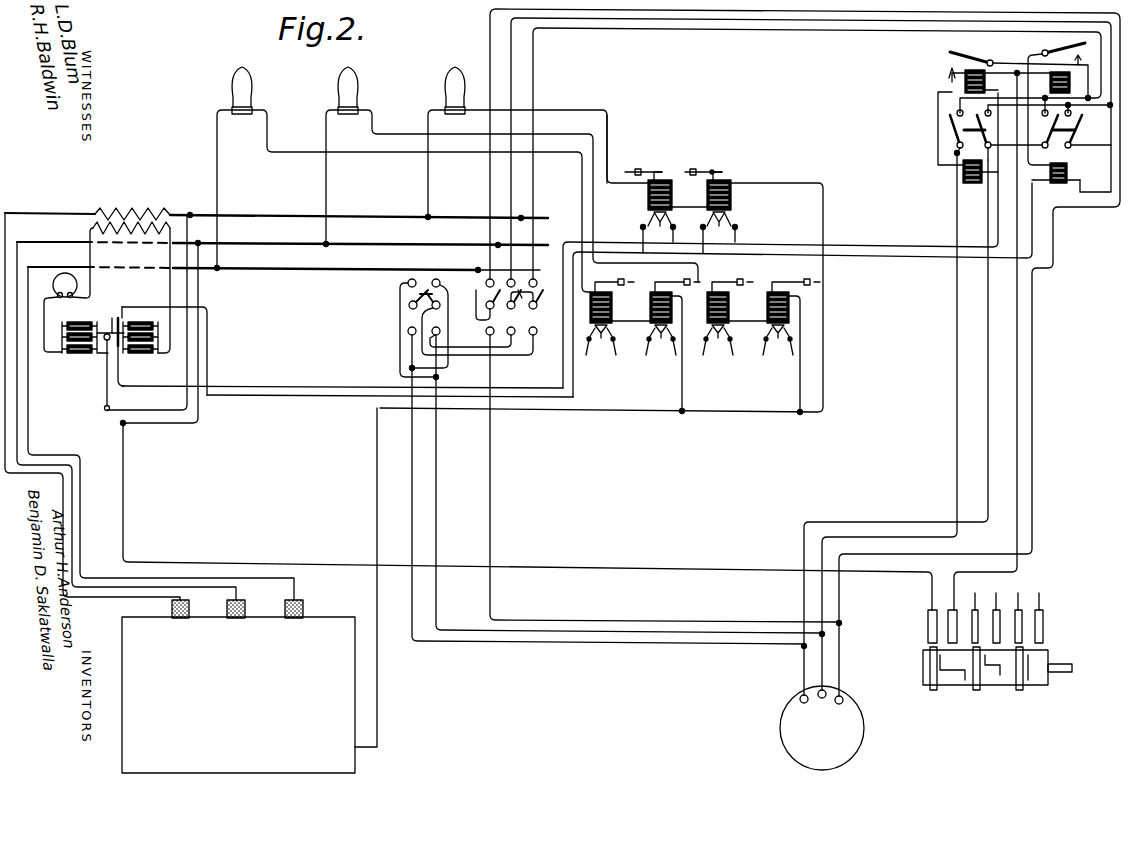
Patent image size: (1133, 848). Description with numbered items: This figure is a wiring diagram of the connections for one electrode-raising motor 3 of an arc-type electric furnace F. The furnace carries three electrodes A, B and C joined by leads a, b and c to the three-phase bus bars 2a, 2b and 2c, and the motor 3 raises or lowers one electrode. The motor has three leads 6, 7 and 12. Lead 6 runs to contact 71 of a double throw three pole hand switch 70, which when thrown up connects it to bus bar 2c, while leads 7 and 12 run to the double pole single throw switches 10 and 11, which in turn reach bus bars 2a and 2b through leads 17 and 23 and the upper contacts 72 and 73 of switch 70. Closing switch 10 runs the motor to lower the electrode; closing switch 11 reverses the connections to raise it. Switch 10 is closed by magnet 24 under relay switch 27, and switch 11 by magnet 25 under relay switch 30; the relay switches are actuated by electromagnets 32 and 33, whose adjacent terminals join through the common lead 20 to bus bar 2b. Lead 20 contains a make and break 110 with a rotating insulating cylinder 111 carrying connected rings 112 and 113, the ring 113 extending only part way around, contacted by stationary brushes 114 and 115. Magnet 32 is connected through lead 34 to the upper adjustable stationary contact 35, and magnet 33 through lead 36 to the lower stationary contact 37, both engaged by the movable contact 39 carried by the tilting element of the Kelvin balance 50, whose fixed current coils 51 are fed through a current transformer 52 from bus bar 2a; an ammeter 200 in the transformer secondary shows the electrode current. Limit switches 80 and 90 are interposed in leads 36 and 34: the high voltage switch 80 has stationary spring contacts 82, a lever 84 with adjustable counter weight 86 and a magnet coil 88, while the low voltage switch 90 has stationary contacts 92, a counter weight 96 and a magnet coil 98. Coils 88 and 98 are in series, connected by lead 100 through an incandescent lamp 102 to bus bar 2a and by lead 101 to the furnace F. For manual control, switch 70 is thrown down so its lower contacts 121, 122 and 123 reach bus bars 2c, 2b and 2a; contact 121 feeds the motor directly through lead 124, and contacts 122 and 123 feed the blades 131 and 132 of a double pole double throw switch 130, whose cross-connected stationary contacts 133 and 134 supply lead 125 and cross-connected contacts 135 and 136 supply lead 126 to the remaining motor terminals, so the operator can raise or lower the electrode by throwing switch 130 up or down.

The bus bar 2a is at (266, 221).
The bus bar 2b is at (266, 248).
The bus bar 2c is at (266, 274).
The electric motor 3 is at (864, 728).
The lead 6 is at (489, 42).
The lead 7 is at (988, 462).
The double pole single throw switch 10 is at (1051, 125).
The double pole single throw switch 11 is at (970, 135).
The lead 12 is at (957, 462).
The lead 17 is at (534, 78).
The common lead 20 is at (128, 493).
The lead 23 is at (513, 98).
The magnet 24 is at (1068, 172).
The magnet 25 is at (973, 183).
The relay switch 27 is at (1062, 42).
The relay switch 30 is at (978, 54).
The electromagnet 32 is at (1050, 82).
The electromagnet 33 is at (994, 116).
The lead 34 is at (312, 398).
The upper adjustable stationary contact 35 is at (118, 320).
The lead 36 is at (312, 386).
The lower stationary contact 37 is at (117, 348).
The movable contact 39 is at (105, 341).
The watt actuated device 50 is at (92, 322).
The fixed current coils 51 is at (140, 328).
The current transformer 52 is at (128, 210).
The double throw three pole hand switch 70 is at (537, 305).
The contact 71 is at (486, 283).
The contact 72 is at (536, 283).
The contact 73 is at (490, 276).
The limit switch 80 is at (743, 300).
The stationary spring contacts 82 is at (731, 222).
The lever 84 is at (713, 170).
The adjustable counter weight 86 is at (693, 169).
The magnet coil 88 is at (731, 190).
The limit switch 90 is at (658, 239).
The stationary contacts 92 is at (648, 220).
The adjustable counter weight 96 is at (638, 169).
The magnet coil 98 is at (648, 198).
The lead 100 is at (607, 131).
The lead 101 is at (823, 367).
The incandescent lamp 102 is at (446, 88).
The make and break 110 is at (978, 657).
The rotating insulating cylinder 111 is at (966, 685).
The ring 112 is at (930, 658).
The ring 113 is at (973, 668).
The stationary brush 114 is at (928, 612).
The stationary brush 115 is at (957, 612).
The lower contact 121 is at (486, 331).
The lower contact 122 is at (511, 327).
The lower contact 123 is at (537, 331).
The lead 124 is at (490, 500).
The lead 125 is at (436, 483).
The lead 126 is at (412, 458).
The double pole double throw switch 130 is at (425, 296).
The blade 131 is at (440, 305).
The blade 132 is at (409, 305).
The stationary contact 133 is at (407, 283).
The stationary contact 134 is at (439, 334).
The stationary contact 135 is at (436, 279).
The stationary contact 136 is at (409, 333).
The ammeter 200 is at (65, 273).
The electrode A is at (189, 609).
The electrode B is at (245, 609).
The electrode C is at (303, 609).
The electric furnace F is at (249, 590).
The lead a is at (63, 505).
The lead b is at (72, 527).
The lead c is at (80, 550).